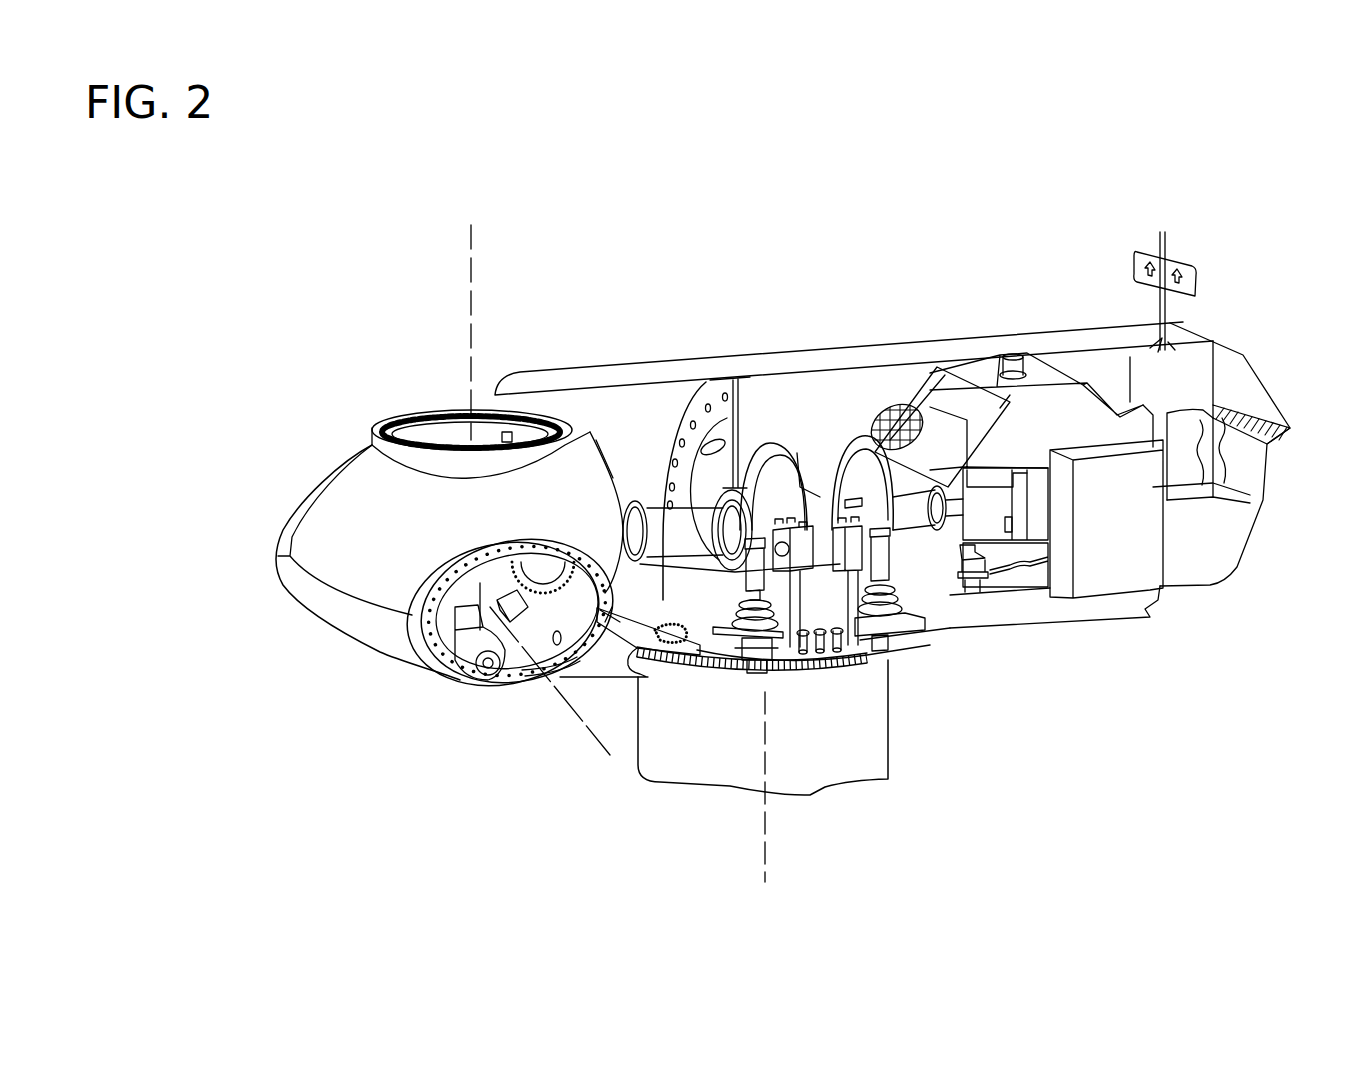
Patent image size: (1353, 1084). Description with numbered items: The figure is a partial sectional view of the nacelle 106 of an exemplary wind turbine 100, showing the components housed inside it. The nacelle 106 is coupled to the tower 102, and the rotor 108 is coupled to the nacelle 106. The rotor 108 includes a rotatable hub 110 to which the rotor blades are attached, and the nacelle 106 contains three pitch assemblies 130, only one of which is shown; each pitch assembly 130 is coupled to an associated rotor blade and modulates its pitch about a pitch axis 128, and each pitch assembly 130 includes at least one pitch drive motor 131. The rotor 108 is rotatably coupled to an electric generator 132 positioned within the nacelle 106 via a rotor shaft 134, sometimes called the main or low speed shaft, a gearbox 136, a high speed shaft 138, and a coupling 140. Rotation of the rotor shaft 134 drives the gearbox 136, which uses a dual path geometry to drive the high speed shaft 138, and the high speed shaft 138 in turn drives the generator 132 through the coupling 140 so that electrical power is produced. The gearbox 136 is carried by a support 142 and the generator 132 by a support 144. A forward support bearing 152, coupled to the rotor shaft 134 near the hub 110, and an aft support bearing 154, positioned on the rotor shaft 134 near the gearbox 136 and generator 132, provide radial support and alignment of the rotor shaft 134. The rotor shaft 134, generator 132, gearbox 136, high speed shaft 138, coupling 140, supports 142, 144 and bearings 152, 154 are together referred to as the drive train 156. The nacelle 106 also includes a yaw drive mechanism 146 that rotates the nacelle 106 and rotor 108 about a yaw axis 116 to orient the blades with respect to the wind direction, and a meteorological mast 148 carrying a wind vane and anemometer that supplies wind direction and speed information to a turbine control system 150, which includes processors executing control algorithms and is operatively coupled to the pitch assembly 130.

The wind turbine 100 is at (300, 285).
The tower 102 is at (820, 783).
The nacelle 106 is at (651, 291).
The rotor 108 is at (265, 542).
The rotatable hub 110 is at (372, 445).
The yaw axis 116 is at (767, 862).
The pitch axis 128 is at (471, 238).
The pitch assembly 130 is at (437, 552).
The pitch drive motor 131 is at (436, 615).
The electric generator 132 is at (983, 520).
The rotor shaft 134 is at (650, 512).
The gearbox 136 is at (860, 465).
The high speed shaft 138 is at (887, 515).
The coupling 140 is at (930, 480).
The support 142 is at (862, 632).
The support 144 is at (967, 550).
The yaw drive mechanism 146 is at (757, 640).
The meteorological mast 148 is at (1195, 268).
The turbine control system 150 is at (1143, 547).
The forward support bearing 152 is at (628, 596).
The aft support bearing 154 is at (793, 477).
The drive train 156 is at (857, 388).